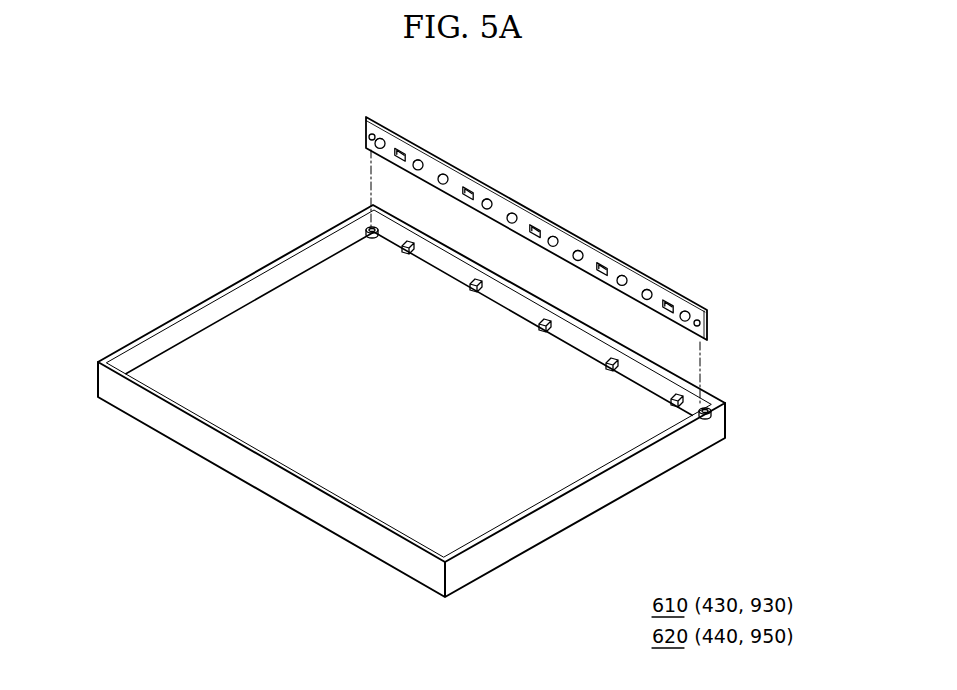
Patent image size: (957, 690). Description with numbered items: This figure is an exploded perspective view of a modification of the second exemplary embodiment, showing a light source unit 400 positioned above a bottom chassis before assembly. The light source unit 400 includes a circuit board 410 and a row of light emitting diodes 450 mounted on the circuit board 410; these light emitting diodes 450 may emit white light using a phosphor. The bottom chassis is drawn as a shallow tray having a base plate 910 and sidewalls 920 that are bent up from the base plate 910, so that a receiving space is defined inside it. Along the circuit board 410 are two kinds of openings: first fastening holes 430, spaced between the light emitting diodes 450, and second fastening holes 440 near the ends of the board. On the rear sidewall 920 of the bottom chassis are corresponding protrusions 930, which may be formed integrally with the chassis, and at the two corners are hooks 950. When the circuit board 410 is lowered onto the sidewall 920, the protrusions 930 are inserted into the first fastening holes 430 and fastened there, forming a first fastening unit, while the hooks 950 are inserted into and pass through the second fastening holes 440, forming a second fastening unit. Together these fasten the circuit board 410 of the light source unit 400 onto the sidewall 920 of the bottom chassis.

The light source unit 400 is at (559, 207).
The circuit board 410 is at (414, 140).
The first fastening holes 430 is at (464, 188).
The second fastening holes 440 is at (371, 134).
The light emitting diodes 450 is at (514, 214).
The base plate 910 is at (310, 436).
The sidewalls 920 is at (298, 497).
The protrusions 930 is at (540, 300).
The hooks 950 is at (370, 228).